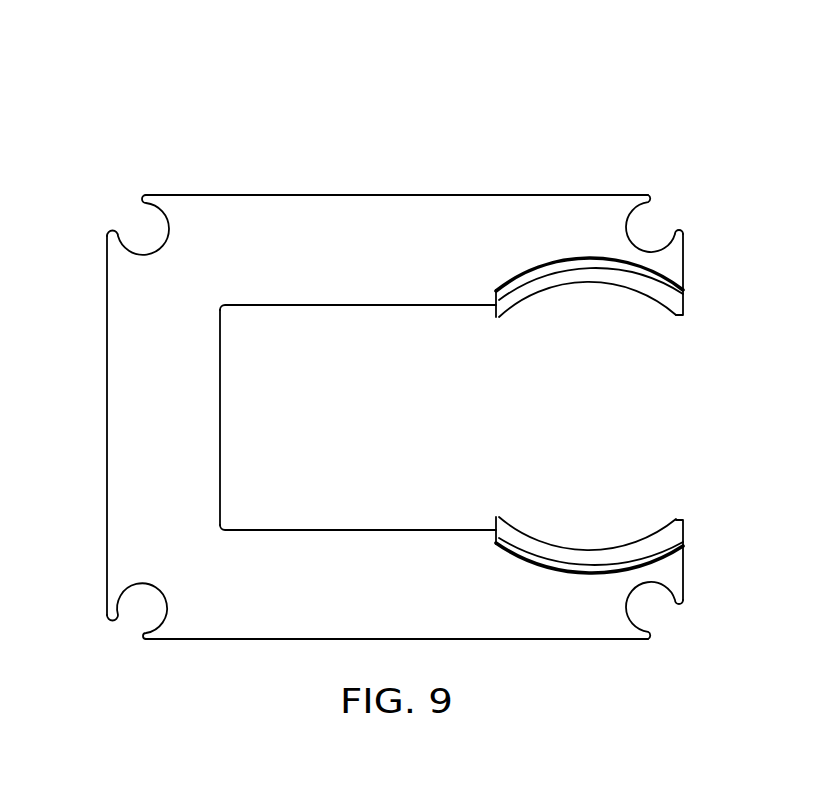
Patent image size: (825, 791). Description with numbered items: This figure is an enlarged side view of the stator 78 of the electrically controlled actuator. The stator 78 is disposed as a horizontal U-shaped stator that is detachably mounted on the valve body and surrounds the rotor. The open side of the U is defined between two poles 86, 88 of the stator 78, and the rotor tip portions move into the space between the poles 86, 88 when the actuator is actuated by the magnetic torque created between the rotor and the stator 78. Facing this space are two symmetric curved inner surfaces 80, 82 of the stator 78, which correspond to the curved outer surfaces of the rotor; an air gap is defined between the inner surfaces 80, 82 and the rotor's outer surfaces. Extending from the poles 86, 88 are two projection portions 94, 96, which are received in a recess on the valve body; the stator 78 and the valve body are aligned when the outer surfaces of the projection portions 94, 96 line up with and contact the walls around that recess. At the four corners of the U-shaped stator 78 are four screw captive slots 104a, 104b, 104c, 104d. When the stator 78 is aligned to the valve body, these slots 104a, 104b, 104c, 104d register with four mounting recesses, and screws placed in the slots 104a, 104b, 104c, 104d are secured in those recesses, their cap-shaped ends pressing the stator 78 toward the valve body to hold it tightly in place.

The stator 78 is at (402, 393).
The curved inner surface 80 is at (643, 513).
The curved inner surface 82 is at (638, 322).
The pole 86 is at (585, 615).
The pole 88 is at (575, 233).
The projection portion 94 is at (683, 545).
The projection portion 96 is at (683, 288).
The screw captive slot 104a is at (152, 605).
The screw captive slot 104b is at (648, 606).
The screw captive slot 104c is at (153, 233).
The screw captive slot 104d is at (653, 222).